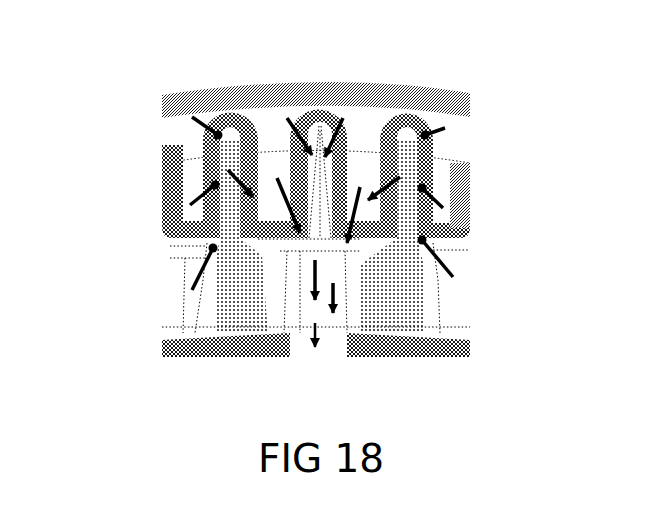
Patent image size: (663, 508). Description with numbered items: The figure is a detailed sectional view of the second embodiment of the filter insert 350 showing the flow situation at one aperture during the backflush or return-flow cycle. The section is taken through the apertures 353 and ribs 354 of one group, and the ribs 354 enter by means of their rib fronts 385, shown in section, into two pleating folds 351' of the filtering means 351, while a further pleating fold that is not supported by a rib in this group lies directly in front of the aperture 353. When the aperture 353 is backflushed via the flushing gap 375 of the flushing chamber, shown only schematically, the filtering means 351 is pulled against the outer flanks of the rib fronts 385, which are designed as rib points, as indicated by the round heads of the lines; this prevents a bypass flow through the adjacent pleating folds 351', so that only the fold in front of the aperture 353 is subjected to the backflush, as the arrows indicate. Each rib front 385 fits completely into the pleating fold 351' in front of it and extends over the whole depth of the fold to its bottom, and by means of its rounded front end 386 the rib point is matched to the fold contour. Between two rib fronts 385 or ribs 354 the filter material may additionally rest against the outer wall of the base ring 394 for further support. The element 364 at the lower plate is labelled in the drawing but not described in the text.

The filter insert 350 is at (217, 60).
The filtering means 351 is at (389, 206).
The pleating fold 351' is at (357, 119).
The rib front 385 is at (233, 157).
The rounded front end 386 is at (420, 123).
The base ring 394 is at (175, 288).
The rib 354 is at (240, 290).
The aperture 353 is at (292, 320).
The flushing gap 375 is at (328, 347).
The base plate 364 is at (397, 352).